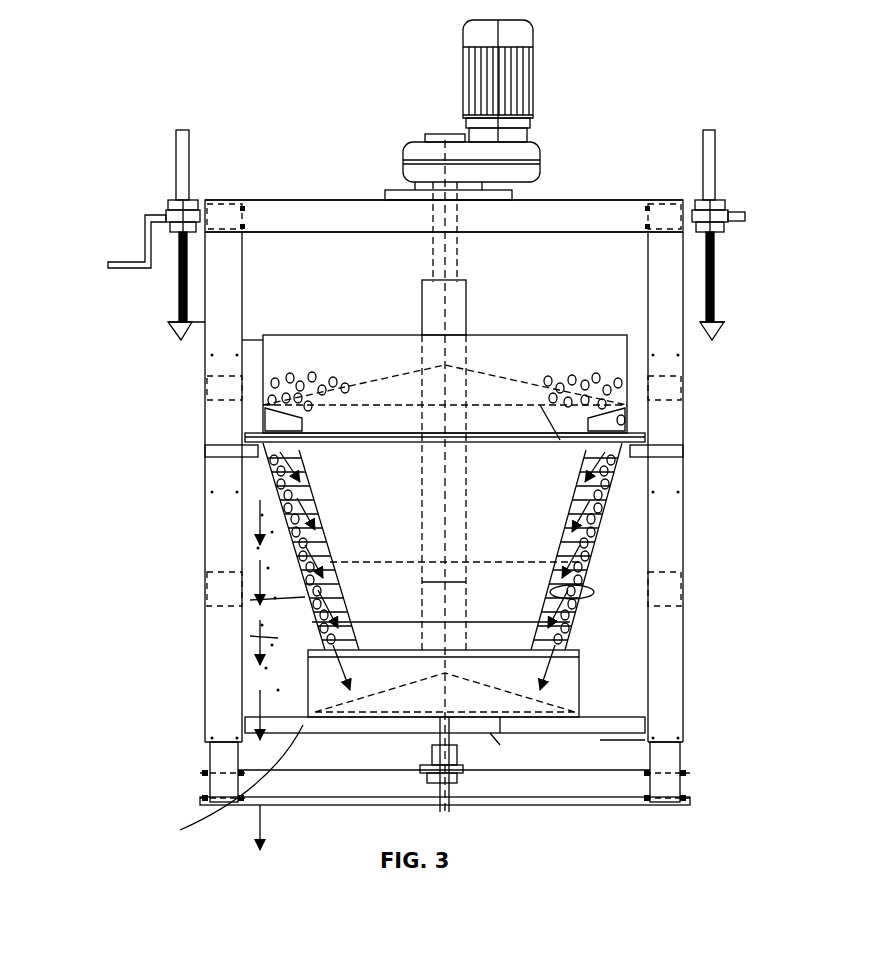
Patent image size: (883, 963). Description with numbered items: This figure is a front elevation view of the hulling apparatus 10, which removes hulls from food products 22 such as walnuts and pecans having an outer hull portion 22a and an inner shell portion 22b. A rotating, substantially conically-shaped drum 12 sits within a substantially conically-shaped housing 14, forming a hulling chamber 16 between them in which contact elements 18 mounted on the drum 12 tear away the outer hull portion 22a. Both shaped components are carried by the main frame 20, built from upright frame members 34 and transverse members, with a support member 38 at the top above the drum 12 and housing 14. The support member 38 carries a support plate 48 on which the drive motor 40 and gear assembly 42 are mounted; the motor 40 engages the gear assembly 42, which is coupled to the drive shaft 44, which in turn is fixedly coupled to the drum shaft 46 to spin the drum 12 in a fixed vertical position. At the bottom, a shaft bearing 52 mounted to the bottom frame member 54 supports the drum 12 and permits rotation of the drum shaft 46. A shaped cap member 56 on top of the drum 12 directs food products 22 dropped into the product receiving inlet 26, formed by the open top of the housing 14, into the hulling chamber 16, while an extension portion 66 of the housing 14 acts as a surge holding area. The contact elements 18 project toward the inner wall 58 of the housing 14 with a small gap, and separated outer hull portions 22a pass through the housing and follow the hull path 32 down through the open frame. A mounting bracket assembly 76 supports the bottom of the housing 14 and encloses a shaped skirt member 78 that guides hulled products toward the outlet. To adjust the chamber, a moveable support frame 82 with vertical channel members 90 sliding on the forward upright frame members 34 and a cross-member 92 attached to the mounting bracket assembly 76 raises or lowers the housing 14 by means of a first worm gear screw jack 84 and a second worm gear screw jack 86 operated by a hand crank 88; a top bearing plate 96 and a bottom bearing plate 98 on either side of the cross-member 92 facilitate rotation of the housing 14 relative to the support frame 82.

The hulling apparatus 10 is at (770, 121).
The drum 12 is at (290, 424).
The housing 14 is at (598, 562).
The hulling chamber 16 is at (592, 512).
The contact elements 18 is at (612, 452).
The main frame 20 is at (690, 467).
The food products 22 is at (285, 388).
The outer hull portion 22a is at (250, 636).
The inner shell portion 22b is at (250, 600).
The product receiving inlet 26 is at (310, 300).
The hull path 32 is at (258, 520).
The upright frame members 34 is at (205, 298).
The support member 38 is at (606, 198).
The drive motor 40 is at (464, 63).
The gear assembly 42 is at (410, 150).
The drive shaft 44 is at (470, 248).
The drum shaft 46 is at (470, 311).
The support plate 48 is at (520, 190).
The shaft bearing 52 is at (420, 768).
The bottom frame member 54 is at (625, 785).
The cap member 56 is at (480, 388).
The inner wall 58 is at (594, 590).
The extension portion 66 is at (260, 347).
The mounting bracket assembly 76 is at (305, 706).
The skirt member 78 is at (350, 698).
The moveable support frame 82 is at (203, 460).
The first worm gear screw jack 84 is at (170, 210).
The second worm gear screw jack 86 is at (745, 216).
The hand crank 88 is at (150, 232).
The vertical channel members 90 is at (665, 725).
The cross-member 92 is at (185, 828).
The top bearing plate 96 is at (535, 702).
The bottom bearing plate 98 is at (498, 740).